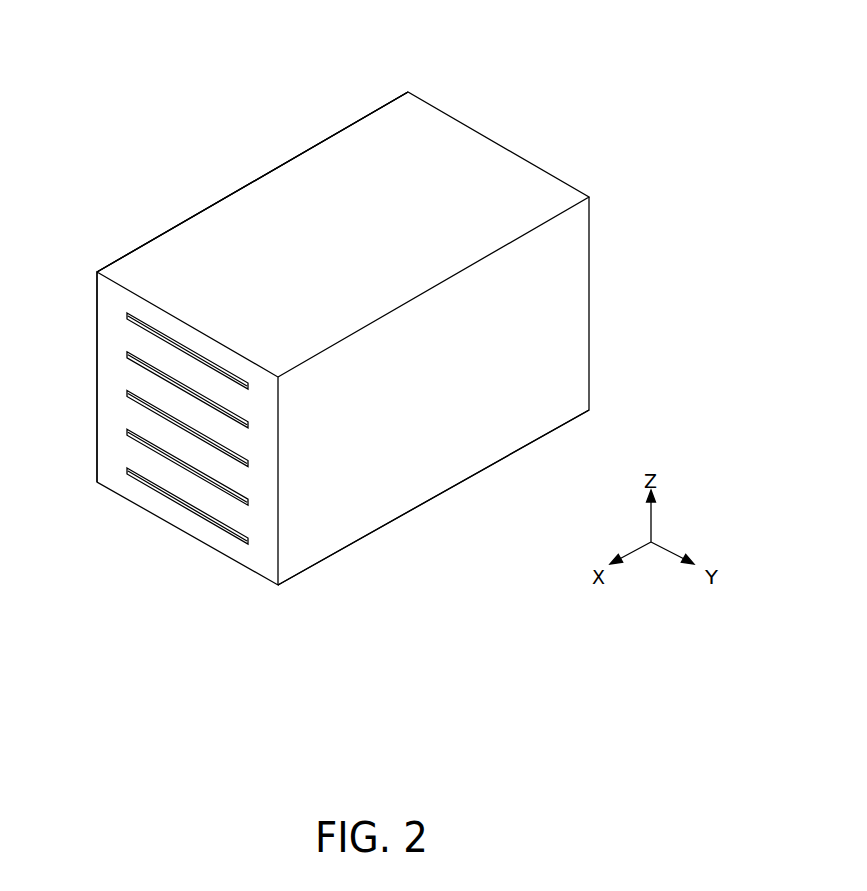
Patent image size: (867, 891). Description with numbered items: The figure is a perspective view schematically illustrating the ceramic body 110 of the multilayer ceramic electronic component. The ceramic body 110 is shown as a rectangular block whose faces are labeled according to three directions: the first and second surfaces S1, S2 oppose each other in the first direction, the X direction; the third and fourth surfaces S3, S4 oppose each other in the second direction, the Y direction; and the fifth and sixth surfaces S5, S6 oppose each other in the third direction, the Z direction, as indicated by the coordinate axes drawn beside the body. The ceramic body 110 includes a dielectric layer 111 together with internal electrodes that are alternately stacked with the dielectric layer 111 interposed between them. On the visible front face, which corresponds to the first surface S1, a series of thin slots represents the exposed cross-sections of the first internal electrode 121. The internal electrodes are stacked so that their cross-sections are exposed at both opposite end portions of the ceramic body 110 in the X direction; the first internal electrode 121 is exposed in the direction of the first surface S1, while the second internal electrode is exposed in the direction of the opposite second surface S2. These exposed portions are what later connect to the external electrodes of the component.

The ceramic body 110 is at (182, 42).
The dielectric layer 111 is at (107, 400).
The first internal electrode 121 is at (152, 370).
The first surface S1 is at (177, 475).
The second surface S2 is at (495, 175).
The third surface S3 is at (518, 401).
The fourth surface S4 is at (207, 238).
The fifth surface S5 is at (375, 152).
The sixth surface S6 is at (404, 485).